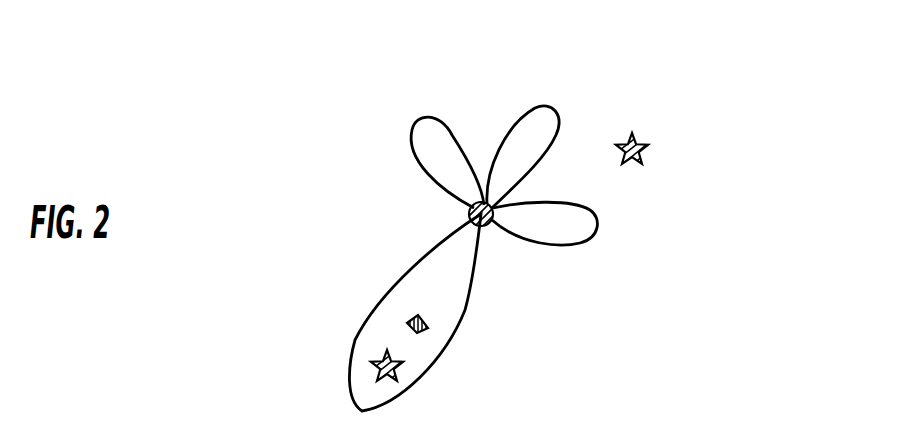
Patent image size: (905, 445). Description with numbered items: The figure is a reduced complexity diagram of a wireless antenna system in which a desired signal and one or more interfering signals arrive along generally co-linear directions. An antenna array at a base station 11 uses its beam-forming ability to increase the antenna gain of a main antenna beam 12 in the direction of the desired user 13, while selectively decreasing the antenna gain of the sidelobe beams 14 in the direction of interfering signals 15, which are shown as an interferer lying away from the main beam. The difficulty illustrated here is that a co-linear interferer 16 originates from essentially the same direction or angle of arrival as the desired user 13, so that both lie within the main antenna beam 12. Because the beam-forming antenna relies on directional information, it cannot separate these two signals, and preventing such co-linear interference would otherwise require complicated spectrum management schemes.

The base station 11 is at (493, 240).
The main antenna beam 12 is at (369, 260).
The desired user 13 is at (446, 328).
The sidelobe beams 14 is at (582, 190).
The interfering signals 15 is at (661, 130).
The co-linear interfering signal 16 is at (348, 364).